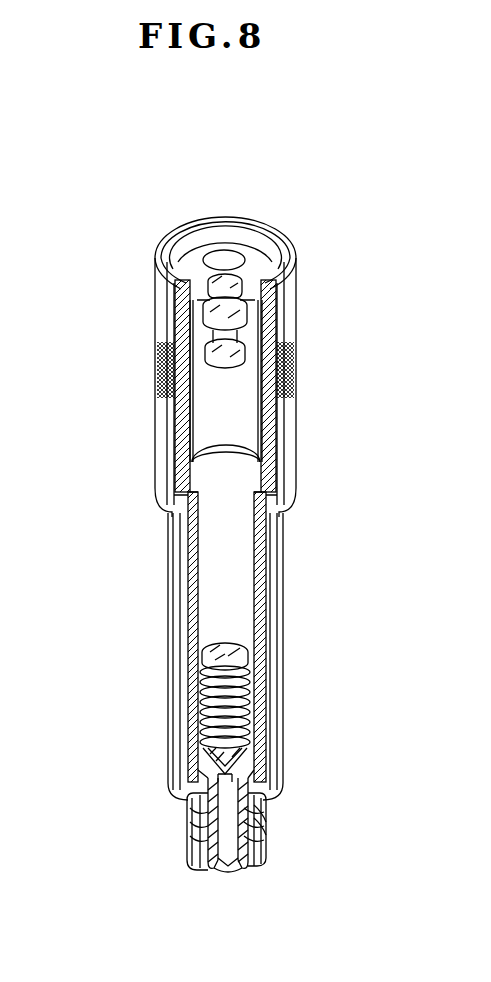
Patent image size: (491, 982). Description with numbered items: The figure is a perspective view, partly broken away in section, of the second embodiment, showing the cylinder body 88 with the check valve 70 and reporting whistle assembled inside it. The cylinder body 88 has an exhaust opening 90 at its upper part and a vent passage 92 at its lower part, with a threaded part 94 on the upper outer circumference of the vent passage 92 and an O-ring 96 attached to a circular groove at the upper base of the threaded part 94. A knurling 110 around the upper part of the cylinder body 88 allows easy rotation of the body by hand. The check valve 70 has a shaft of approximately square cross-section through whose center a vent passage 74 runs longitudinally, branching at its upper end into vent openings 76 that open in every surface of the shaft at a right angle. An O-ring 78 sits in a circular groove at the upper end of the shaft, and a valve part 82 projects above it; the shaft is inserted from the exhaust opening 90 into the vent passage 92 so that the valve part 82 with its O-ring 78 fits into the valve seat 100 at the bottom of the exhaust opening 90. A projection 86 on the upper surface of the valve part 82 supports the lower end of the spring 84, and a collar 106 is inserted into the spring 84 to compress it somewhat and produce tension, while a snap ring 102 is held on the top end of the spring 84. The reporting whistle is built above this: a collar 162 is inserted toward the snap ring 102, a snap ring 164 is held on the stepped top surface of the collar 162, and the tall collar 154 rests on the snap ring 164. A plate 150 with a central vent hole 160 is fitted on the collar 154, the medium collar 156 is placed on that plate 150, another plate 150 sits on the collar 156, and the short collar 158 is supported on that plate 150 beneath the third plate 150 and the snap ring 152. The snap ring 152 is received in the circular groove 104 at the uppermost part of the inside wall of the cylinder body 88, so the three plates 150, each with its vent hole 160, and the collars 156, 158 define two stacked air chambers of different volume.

The check valve 70 is at (238, 863).
The vent passage 74 is at (227, 852).
The vent openings 76 is at (207, 778).
The O-ring 78 is at (213, 767).
The valve part 82 is at (245, 762).
The spring 84 is at (217, 705).
The projection 86 is at (252, 730).
The cylinder body 88 is at (282, 664).
The exhaust opening 90 is at (223, 547).
The vent passage 92 is at (247, 868).
The threaded part 94 is at (263, 838).
The O-ring 96 is at (192, 797).
The valve seat 100 is at (207, 755).
The snap ring 102 is at (255, 645).
The circular groove 104 is at (297, 300).
The collar 106 is at (255, 750).
The knurling 110 is at (283, 378).
The circular plates 150 is at (185, 305).
The snap ring 152 is at (253, 245).
The tall collar 154 is at (262, 428).
The medium collar 156 is at (283, 347).
The short collar 158 is at (262, 318).
The vent holes 160 is at (222, 272).
The collar 162 is at (258, 552).
The snap ring 164 is at (228, 452).